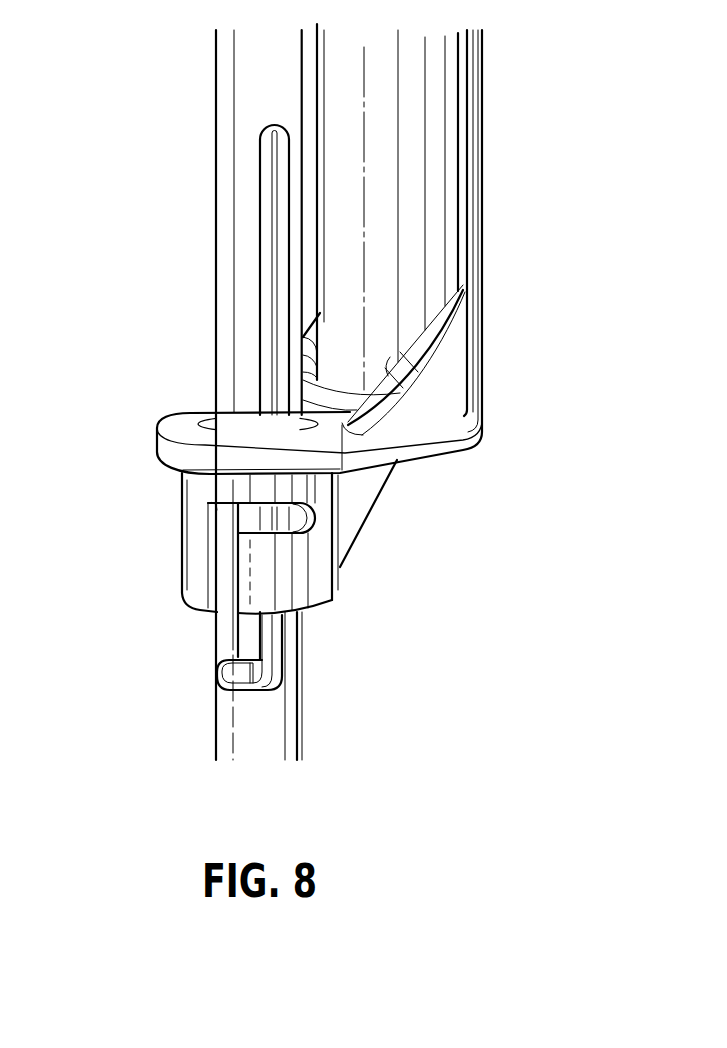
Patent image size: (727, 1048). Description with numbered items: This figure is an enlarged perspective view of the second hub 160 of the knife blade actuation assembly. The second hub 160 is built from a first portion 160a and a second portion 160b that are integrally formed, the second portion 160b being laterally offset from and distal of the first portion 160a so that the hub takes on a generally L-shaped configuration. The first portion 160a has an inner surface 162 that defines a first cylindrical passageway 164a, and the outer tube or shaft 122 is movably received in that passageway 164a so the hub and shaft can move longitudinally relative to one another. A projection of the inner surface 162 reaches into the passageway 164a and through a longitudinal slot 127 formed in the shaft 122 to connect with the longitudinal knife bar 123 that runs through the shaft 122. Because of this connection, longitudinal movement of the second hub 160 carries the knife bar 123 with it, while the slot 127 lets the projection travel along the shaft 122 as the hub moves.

The outer tube or shaft 122 is at (225, 243).
The longitudinal knife bar 123 is at (265, 665).
The longitudinal slot 127 is at (262, 200).
The second hub 160 is at (432, 466).
The first portion 160a is at (150, 436).
The second portion 160b is at (486, 219).
The inner surface 162 is at (243, 528).
The first cylindrical passageway 164a is at (210, 411).